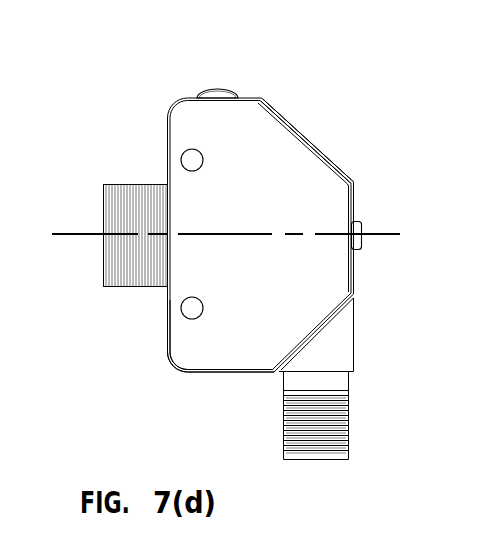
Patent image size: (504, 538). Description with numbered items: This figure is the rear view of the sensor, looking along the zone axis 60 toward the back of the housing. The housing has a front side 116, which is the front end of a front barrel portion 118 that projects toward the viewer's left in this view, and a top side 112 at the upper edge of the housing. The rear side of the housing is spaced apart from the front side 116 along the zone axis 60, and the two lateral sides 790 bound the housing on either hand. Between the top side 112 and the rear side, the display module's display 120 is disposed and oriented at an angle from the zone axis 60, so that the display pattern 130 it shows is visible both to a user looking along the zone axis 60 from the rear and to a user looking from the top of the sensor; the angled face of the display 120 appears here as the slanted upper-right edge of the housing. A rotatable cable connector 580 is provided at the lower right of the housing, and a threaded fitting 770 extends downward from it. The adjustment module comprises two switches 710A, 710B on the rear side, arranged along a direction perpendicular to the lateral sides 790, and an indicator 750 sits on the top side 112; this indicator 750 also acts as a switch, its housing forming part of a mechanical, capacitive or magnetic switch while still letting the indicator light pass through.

The zone axis 60 is at (68, 234).
The top side 112 is at (252, 93).
The front side 116 is at (103, 255).
The front barrel portion 118 is at (129, 184).
The display 120 is at (357, 134).
The display pattern 130 is at (314, 147).
The rotatable cable connector 580 is at (354, 335).
The switch 710A is at (419, 203).
The switch 710B is at (361, 228).
The indicator 750 is at (216, 92).
The threaded outlet connector 770 is at (349, 418).
The lateral sides 790 is at (188, 342).